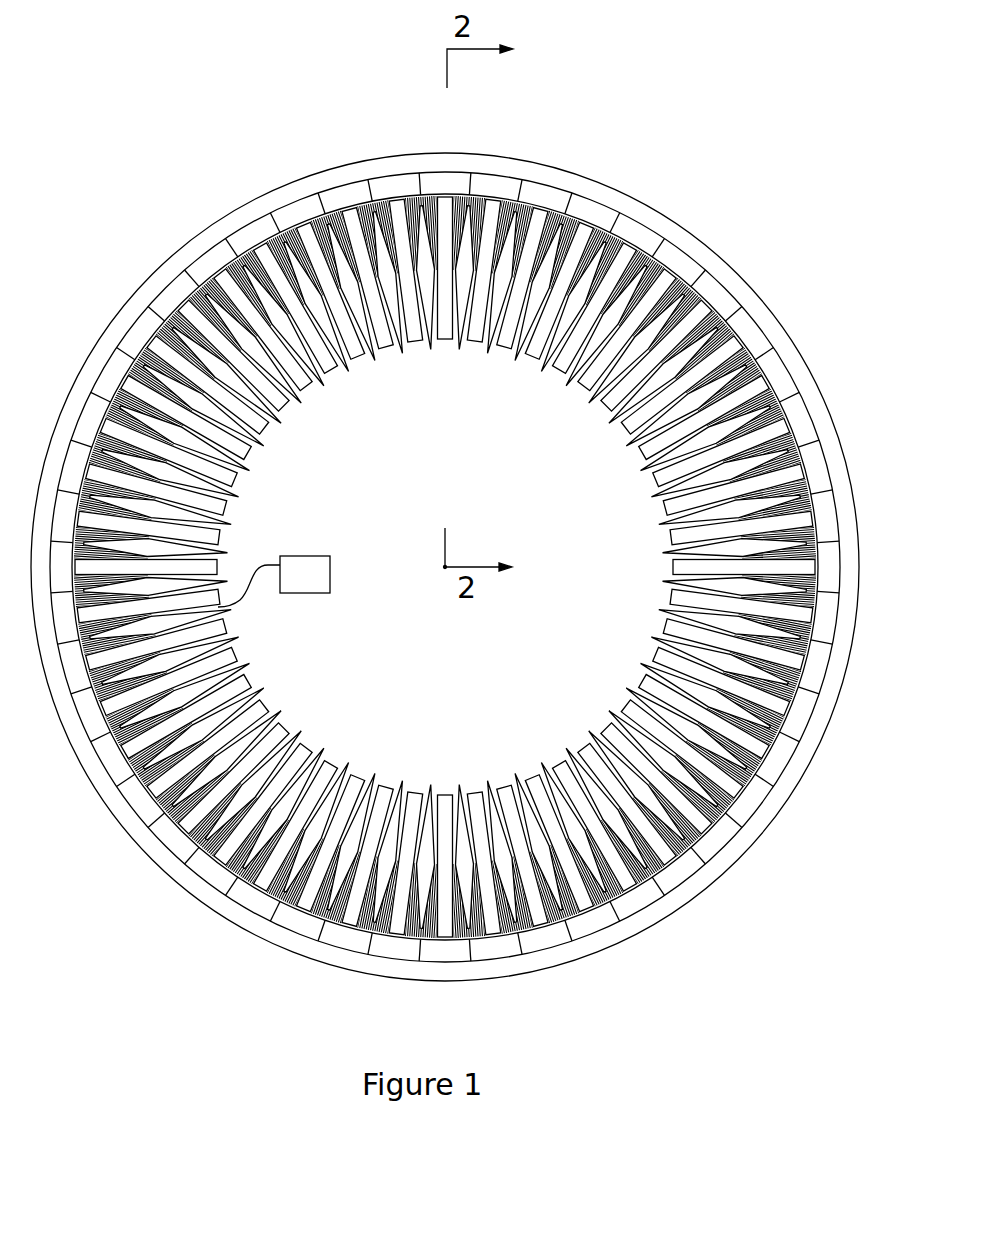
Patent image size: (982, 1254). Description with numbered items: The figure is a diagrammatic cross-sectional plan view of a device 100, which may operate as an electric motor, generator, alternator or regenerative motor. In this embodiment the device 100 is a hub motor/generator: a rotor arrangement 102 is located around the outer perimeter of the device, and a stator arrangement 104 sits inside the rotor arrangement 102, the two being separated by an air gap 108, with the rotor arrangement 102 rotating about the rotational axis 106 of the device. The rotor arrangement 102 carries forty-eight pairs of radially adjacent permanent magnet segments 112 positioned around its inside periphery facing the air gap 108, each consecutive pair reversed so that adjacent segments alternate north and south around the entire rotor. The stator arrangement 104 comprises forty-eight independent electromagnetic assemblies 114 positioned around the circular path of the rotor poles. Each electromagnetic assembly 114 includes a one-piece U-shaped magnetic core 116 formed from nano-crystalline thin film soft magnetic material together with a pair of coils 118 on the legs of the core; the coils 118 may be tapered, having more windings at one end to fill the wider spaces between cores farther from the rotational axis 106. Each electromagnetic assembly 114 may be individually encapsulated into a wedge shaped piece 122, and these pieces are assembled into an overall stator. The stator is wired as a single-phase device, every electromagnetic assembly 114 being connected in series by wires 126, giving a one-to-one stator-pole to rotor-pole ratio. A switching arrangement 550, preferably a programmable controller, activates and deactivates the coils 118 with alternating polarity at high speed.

The device 100 is at (710, 162).
The rotor arrangement 102 is at (690, 240).
The stator arrangement 104 is at (705, 302).
The rotational axis 106 is at (445, 567).
The air gap 108 is at (385, 192).
The permanent magnet segments 112 is at (507, 173).
The electromagnetic assembly 114 is at (560, 210).
The one-piece magnetic core 116 is at (733, 350).
The coils 118 is at (767, 397).
The wedge shaped piece 122 is at (373, 355).
The wires 126 is at (285, 747).
The switching arrangement 550 is at (308, 557).